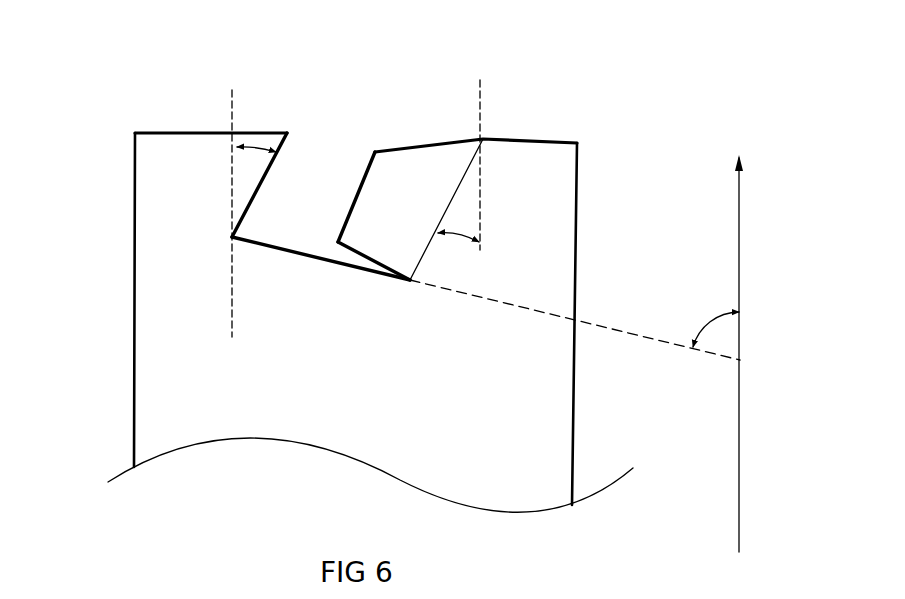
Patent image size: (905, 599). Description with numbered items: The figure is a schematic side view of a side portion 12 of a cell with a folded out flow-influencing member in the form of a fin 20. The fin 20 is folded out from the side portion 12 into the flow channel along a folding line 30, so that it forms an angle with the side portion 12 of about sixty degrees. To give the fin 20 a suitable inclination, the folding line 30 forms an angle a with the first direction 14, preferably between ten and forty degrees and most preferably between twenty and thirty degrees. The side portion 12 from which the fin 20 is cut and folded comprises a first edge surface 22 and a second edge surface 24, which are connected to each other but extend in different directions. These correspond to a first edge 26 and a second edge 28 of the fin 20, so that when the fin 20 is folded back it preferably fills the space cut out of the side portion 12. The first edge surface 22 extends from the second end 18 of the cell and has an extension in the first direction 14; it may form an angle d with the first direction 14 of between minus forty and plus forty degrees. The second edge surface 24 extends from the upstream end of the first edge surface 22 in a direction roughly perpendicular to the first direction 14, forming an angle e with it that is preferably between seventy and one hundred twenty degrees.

The side portion 12 is at (545, 193).
The first direction 14 is at (738, 248).
The second end 18 is at (180, 132).
The fin 20 is at (402, 188).
The first edge surface 22 is at (285, 152).
The second edge surface 24 is at (300, 257).
The first edge 26 is at (360, 183).
The second edge 28 is at (360, 255).
The folding line 30 is at (468, 168).